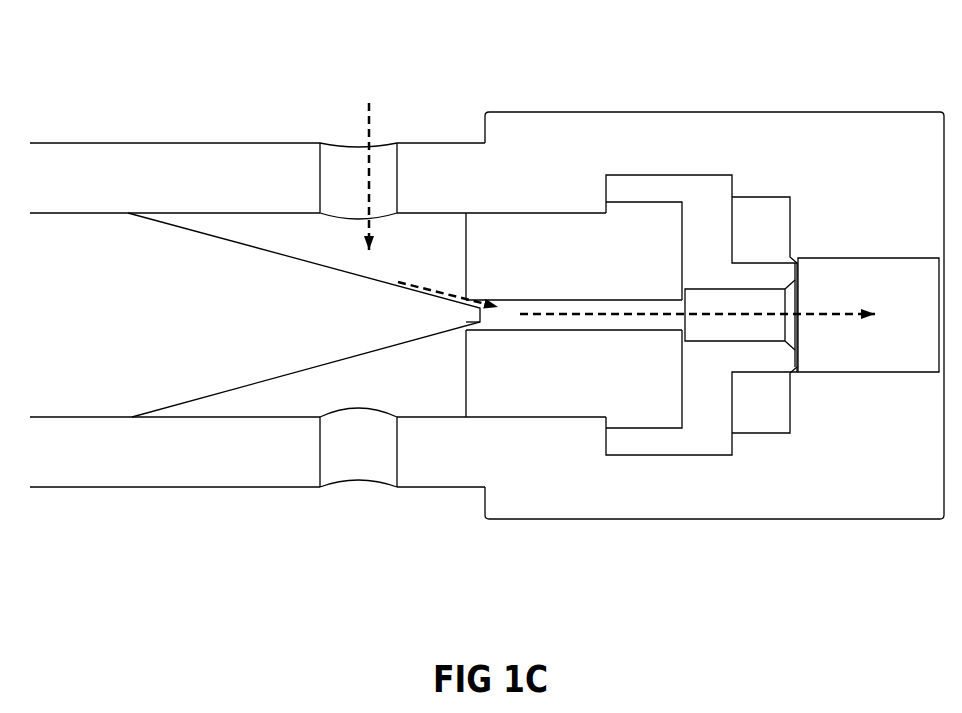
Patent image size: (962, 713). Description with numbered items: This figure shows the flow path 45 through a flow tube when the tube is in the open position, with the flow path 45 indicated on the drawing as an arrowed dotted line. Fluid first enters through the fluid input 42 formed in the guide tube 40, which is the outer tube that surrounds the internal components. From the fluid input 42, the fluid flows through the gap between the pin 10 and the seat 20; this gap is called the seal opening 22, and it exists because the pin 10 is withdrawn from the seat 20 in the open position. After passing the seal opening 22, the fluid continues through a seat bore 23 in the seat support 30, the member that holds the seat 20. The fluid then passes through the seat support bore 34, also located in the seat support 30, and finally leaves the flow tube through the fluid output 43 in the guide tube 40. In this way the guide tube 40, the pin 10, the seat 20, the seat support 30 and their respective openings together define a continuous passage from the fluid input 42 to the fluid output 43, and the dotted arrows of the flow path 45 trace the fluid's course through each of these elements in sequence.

The pin 10 is at (212, 398).
The seat 20 is at (620, 428).
The seal opening 22 is at (470, 303).
The seat bore 23 is at (610, 314).
The seat support 30 is at (723, 165).
The seat support bore 34 is at (730, 327).
The guide tube 40 is at (268, 497).
The fluid input 42 is at (350, 180).
The fluid output 43 is at (925, 298).
The flow path 45 is at (367, 159).